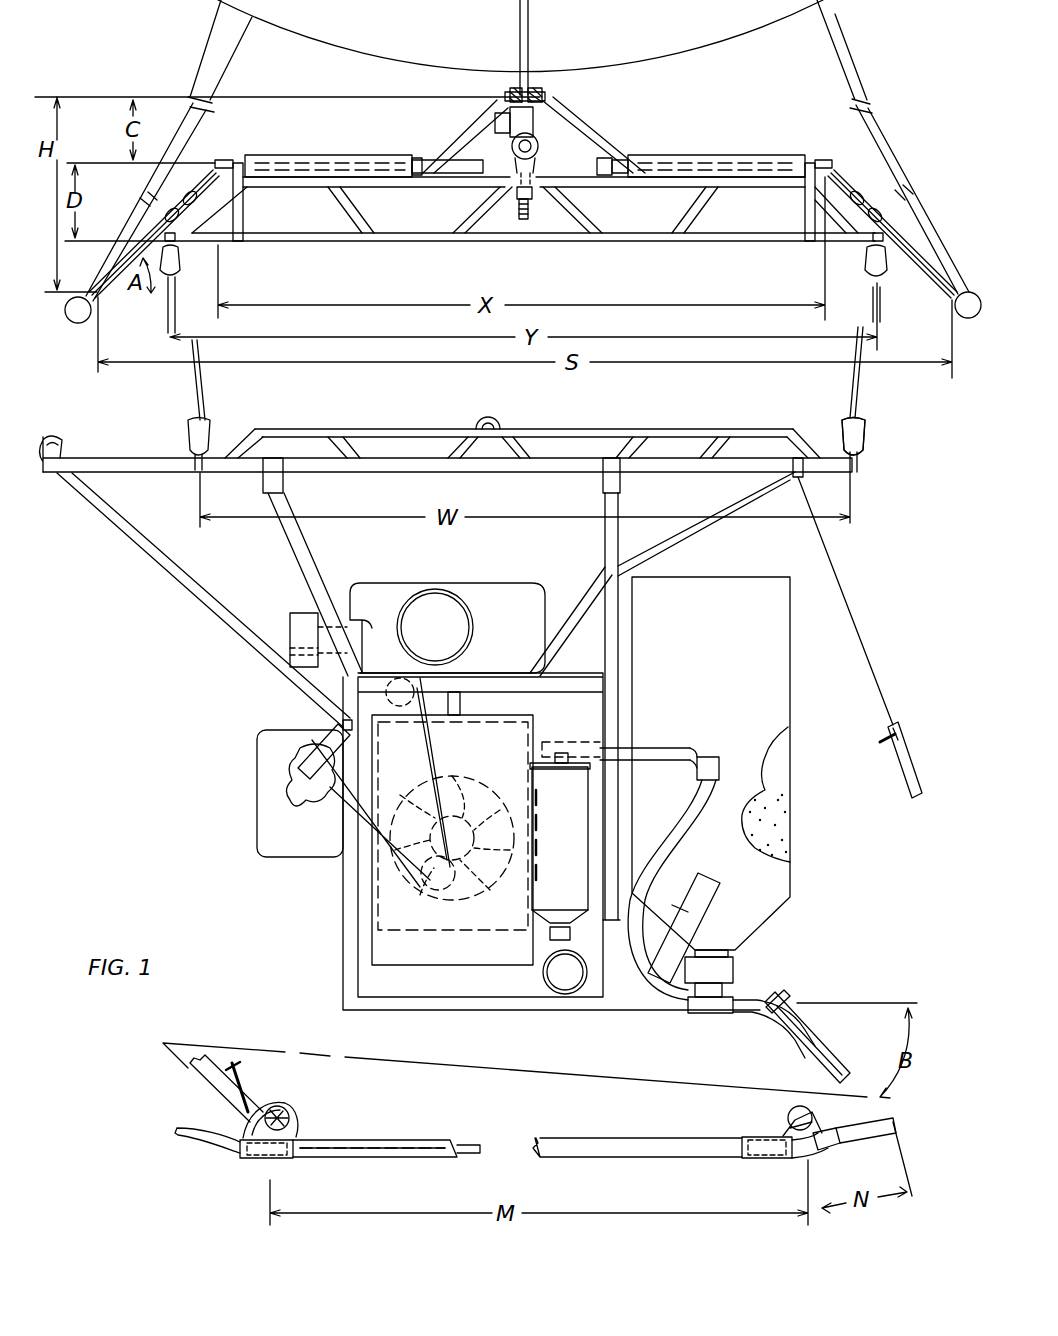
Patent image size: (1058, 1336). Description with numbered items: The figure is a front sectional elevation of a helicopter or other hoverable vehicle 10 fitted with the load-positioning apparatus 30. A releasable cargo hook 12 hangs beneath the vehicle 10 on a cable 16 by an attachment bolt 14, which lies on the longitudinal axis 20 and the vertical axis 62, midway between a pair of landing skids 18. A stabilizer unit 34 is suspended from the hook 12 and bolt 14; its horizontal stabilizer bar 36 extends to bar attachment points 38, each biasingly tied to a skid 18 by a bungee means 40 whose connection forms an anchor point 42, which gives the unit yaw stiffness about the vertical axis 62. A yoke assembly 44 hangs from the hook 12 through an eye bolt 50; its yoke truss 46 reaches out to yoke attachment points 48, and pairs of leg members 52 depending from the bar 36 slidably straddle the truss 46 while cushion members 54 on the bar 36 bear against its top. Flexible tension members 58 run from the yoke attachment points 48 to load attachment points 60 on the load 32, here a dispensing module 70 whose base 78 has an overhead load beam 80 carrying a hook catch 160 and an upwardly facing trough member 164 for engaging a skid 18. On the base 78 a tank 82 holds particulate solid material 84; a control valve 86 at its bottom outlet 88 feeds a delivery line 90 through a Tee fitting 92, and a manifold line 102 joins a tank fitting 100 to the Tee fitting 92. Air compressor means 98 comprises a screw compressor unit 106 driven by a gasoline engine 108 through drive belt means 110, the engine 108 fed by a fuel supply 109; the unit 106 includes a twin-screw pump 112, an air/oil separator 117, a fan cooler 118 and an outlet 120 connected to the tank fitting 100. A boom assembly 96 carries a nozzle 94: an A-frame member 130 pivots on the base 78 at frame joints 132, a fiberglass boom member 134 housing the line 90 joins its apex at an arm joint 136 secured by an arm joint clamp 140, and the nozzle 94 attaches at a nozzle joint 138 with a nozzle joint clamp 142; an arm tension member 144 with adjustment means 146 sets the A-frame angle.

The hoverable vehicle 10 is at (331, 73).
The releasable cargo hook 12 is at (533, 128).
The attachment bolt 14 is at (548, 93).
The cable 16 is at (505, 92).
The skids 18 is at (82, 323).
The longitudinal axis 20 is at (513, 150).
The apparatus 30 is at (458, 488).
The load 32 is at (447, 473).
The stabilizer unit 34 is at (533, 236).
The stabilizer bar 36 is at (424, 150).
The bar attachment points 38 is at (218, 160).
The bungee means 40 is at (130, 208).
The anchor point 42 is at (100, 302).
The yoke assembly 44 is at (427, 233).
The yoke truss 46 is at (342, 233).
The yoke attachment points 48 is at (178, 252).
The eye bolt 50 is at (533, 166).
The leg members 52 is at (243, 214).
The cushion members 54 is at (337, 155).
The flexible tension members 58 is at (197, 366).
The load attachment points 60 is at (862, 462).
The vertical axis 62 is at (528, 18).
The dispensing module 70 is at (288, 571).
The base 78 is at (343, 993).
The load beam 80 is at (412, 476).
The tank 82 is at (792, 690).
The particulate solid material 84 is at (778, 842).
The control valve 86 is at (733, 965).
The bottom outlet 88 is at (735, 940).
The delivery line 90 is at (765, 1030).
The Tee fitting 92 is at (710, 1014).
The nozzle 94 is at (873, 1138).
The boom assembly 96 is at (621, 1176).
The air compressor means 98 is at (370, 862).
The tank fitting 100 is at (722, 758).
The manifold line 102 is at (686, 824).
The screw compressor unit 106 is at (380, 898).
The gasoline reciprocating engine 108 is at (412, 583).
The fuel supply 109 is at (257, 786).
The drive belt means 110 is at (320, 800).
The twin-screw pump 112 is at (338, 836).
The air/oil separator 117 is at (575, 812).
The fan cooler 118 is at (536, 836).
The outlet 120 is at (548, 742).
The A-frame member 130 is at (845, 1077).
The frame joints 132 is at (790, 994).
The boom member 134 is at (426, 1158).
The arm joint 136 is at (270, 1160).
The nozzle joint 138 is at (784, 1160).
The arm joint clamp 140 is at (293, 1111).
The nozzle joint clamp 142 is at (790, 1118).
The arm tension member 144 is at (250, 1100).
The adjustment means 146 is at (885, 748).
The hook catch 160 is at (500, 418).
The trough member 164 is at (58, 440).